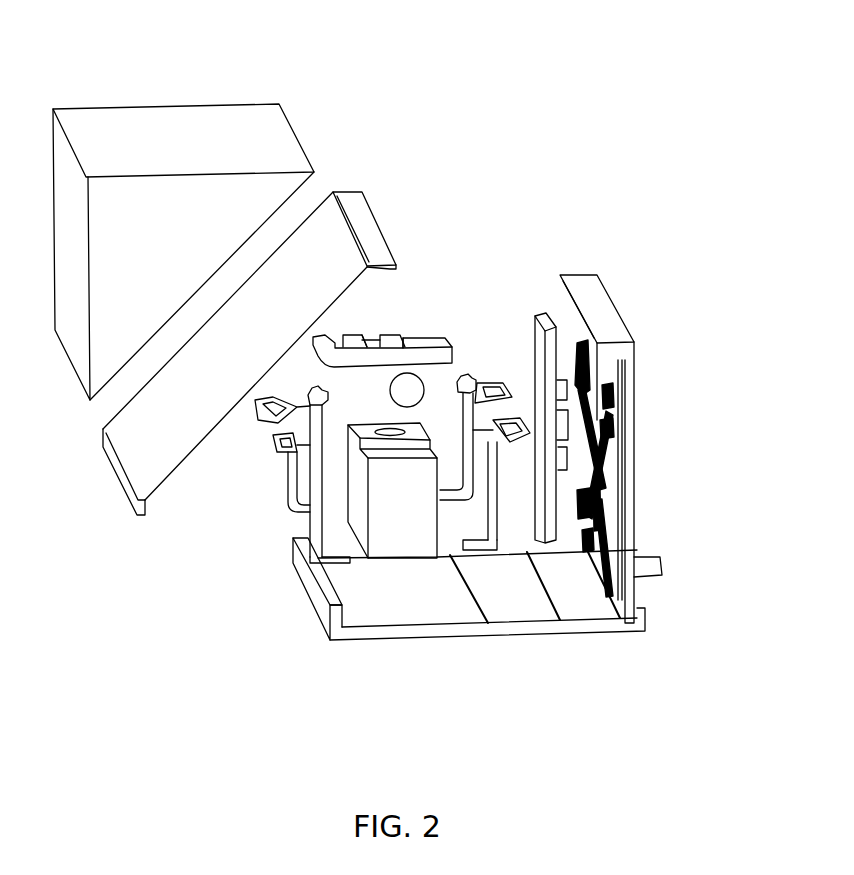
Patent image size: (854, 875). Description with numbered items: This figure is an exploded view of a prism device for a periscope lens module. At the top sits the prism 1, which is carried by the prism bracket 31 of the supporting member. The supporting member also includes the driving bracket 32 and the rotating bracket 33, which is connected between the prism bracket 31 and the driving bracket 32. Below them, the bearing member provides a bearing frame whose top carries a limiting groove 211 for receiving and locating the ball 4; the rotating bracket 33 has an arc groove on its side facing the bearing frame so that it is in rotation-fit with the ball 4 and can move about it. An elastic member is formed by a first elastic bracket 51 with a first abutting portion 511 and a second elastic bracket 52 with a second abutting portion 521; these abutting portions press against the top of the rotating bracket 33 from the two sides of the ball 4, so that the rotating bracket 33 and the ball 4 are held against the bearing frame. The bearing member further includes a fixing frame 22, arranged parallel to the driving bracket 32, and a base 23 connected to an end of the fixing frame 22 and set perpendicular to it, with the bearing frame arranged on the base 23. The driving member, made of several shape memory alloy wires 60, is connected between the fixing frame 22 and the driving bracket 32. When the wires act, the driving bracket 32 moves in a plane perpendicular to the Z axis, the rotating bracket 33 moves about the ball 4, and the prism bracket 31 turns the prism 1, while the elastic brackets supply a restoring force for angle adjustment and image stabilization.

The prism 1 is at (113, 123).
The prism bracket 31 is at (323, 235).
The driving bracket 32 is at (537, 313).
The rotating bracket 33 is at (420, 352).
The limiting groove 211 is at (413, 420).
The ball 4 is at (403, 393).
The first elastic bracket 51 is at (323, 540).
The first abutting portion 511 is at (313, 400).
The second elastic bracket 52 is at (493, 503).
The second abutting portion 521 is at (463, 380).
The fixing frame 22 is at (620, 467).
The shape memory alloy wire 60 is at (600, 490).
The base 23 is at (442, 617).